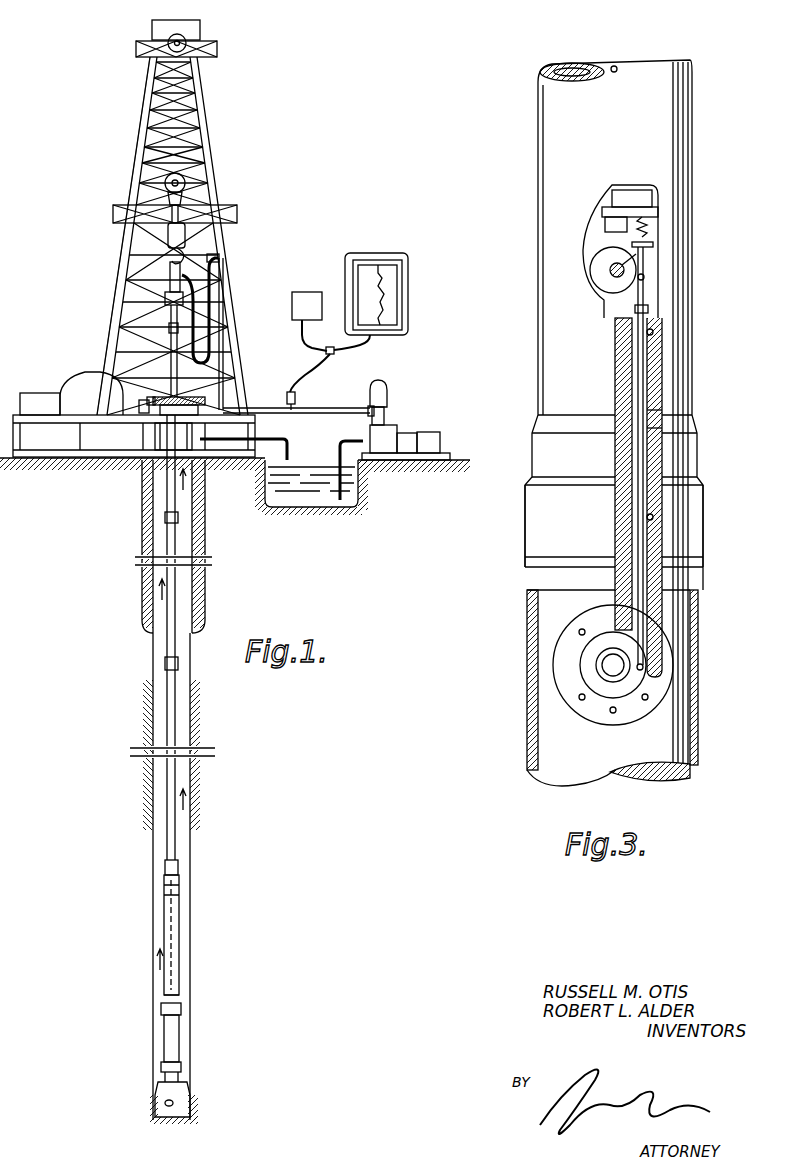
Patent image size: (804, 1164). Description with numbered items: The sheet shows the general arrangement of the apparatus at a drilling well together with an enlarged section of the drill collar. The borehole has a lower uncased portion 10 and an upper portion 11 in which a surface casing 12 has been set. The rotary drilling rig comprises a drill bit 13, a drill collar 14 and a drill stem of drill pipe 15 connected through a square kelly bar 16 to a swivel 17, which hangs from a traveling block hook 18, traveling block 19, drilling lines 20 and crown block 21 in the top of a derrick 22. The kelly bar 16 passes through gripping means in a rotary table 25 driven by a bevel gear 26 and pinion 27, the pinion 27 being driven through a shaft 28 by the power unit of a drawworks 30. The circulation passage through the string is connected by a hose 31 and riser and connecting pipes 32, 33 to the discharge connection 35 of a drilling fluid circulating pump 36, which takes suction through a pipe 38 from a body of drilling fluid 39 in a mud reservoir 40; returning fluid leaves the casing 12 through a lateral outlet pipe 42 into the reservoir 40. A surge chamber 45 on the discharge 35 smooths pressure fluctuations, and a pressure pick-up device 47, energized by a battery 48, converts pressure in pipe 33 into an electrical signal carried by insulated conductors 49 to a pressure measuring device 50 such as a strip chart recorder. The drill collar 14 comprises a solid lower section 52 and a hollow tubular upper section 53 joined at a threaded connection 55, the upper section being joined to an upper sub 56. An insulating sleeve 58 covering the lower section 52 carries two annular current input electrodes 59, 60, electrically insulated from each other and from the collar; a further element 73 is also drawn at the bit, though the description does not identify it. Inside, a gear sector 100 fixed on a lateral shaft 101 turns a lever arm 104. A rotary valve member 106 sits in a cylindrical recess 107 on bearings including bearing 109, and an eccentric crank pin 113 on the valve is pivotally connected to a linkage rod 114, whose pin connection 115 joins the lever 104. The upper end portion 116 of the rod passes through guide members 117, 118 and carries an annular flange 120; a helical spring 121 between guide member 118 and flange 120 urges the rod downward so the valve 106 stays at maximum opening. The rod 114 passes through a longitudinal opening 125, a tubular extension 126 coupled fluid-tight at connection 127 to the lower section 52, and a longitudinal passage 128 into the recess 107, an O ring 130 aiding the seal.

In FIG. 1, the lower uncased portion of the borehole 10 is at (155, 827).
In FIG. 1, the upper portion of the borehole 11 is at (150, 589).
In FIG. 1, the surface casing 12 is at (147, 536).
In FIG. 1, the drill bit 13 is at (190, 1100).
In FIG. 1, the drill collar 14 is at (190, 995).
In FIG. 1, the drill pipe 15 is at (170, 651).
In FIG. 1, the square kelly bar 16 is at (178, 374).
In FIG. 1, the swivel 17 is at (166, 300).
In FIG. 1, the traveling block hook 18 is at (186, 238).
In FIG. 1, the traveling block 19 is at (185, 188).
In FIG. 1, the drilling lines 20 is at (159, 228).
In FIG. 1, the crown block 21 is at (186, 38).
In FIG. 1, the derrick 22 is at (117, 289).
In FIG. 1, the rotary table 25 is at (190, 398).
In FIG. 1, the bevel gear 26 is at (151, 397).
In FIG. 1, the pinion 27 is at (143, 405).
In FIG. 1, the shaft 28 is at (136, 412).
In FIG. 1, the drawworks 30 is at (78, 407).
In FIG. 1, the hose 31 is at (208, 283).
In FIG. 1, the riser pipe 32 is at (222, 352).
In FIG. 1, the connecting pipe 33 is at (322, 408).
In FIG. 1, the discharge connection 35 is at (370, 421).
In FIG. 1, the drilling fluid circulating pump 36 is at (410, 420).
In FIG. 1, the suction pipe 38 is at (340, 460).
In FIG. 1, the body of drilling fluid 39 is at (300, 466).
In FIG. 1, the mud reservoir 40 is at (268, 500).
In FIG. 1, the lateral outlet pipe 42 is at (242, 455).
In FIG. 1, the surge chamber 45 is at (382, 388).
In FIG. 1, the pressure pick-up device 47 is at (289, 395).
In FIG. 1, the battery 48 is at (302, 292).
In FIG. 1, the insulated conductors 49 is at (328, 368).
In FIG. 1, the pressure measuring device 50 is at (404, 298).
In FIG. 1, the lower section of drill collar 52 is at (172, 1040).
In FIG. 3, the lower section of drill collar 52 is at (587, 760).
In FIG. 3, the upper tubular section of drill collar 53 is at (668, 100).
In FIG. 1, the threaded connection 55 is at (172, 953).
In FIG. 1, the upper sub 56 is at (172, 885).
In FIG. 3, the insulating sleeve 58 is at (694, 743).
In FIG. 1, the annular current input electrode 59 is at (181, 1009).
In FIG. 3, the annular current input electrode 59 is at (535, 528).
In FIG. 1, the annular current input electrode 60 is at (165, 1067).
In FIG. 1, the bit nozzle 73 is at (165, 1103).
In FIG. 3, the gear sector 100 is at (592, 253).
In FIG. 3, the lateral shaft 101 is at (609, 279).
In FIG. 3, the lever arm 104 is at (627, 283).
In FIG. 3, the rotary valve member 106 is at (600, 683).
In FIG. 3, the cylindrical recess 107 is at (583, 673).
In FIG. 3, the bearing 109 is at (605, 658).
In FIG. 3, the crank pin 113 is at (644, 667).
In FIG. 3, the linkage rod 114 is at (654, 310).
In FIG. 3, the pin connection 115 is at (645, 277).
In FIG. 3, the upper end portion of linkage rod 116 is at (645, 252).
In FIG. 3, the guide member 117 is at (653, 246).
In FIG. 3, the guide member 118 is at (660, 212).
In FIG. 3, the annular flange 120 is at (648, 240).
In FIG. 3, the helical spring 121 is at (648, 225).
In FIG. 3, the longitudinal opening 125 is at (652, 332).
In FIG. 3, the tubular extension 126 is at (658, 367).
In FIG. 3, the coupling connection 127 is at (658, 410).
In FIG. 3, the longitudinal passage 128 is at (652, 517).
In FIG. 3, the O ring 130 is at (660, 428).